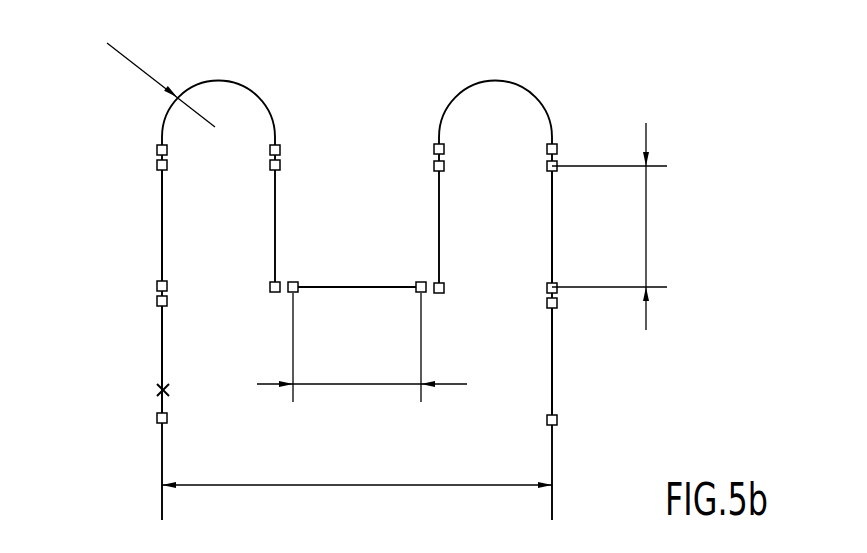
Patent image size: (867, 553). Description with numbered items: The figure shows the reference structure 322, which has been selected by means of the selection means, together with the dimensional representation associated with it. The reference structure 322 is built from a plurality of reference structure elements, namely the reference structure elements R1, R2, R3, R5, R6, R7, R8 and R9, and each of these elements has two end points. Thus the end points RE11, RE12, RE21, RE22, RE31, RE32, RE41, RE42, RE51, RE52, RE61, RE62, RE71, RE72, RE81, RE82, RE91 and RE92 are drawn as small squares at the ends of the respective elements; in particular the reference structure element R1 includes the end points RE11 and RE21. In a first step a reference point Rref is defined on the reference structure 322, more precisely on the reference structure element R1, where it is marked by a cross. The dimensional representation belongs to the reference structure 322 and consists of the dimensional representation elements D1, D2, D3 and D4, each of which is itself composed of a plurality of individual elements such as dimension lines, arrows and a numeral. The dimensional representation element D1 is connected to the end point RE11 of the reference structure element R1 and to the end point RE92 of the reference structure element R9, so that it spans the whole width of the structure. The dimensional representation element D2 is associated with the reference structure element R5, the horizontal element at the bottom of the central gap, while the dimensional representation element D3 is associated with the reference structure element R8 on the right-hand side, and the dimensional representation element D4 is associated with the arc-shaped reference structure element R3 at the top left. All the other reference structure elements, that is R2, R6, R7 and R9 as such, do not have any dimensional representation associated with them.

The reference structure 322 is at (150, 488).
The reference structure element R1 is at (308, 220).
The reference structure element R2 is at (162, 226).
The reference structure element R3 is at (220, 80).
The reference structure element R5 is at (353, 290).
The reference structure element R6 is at (439, 222).
The reference structure element R7 is at (490, 80).
The reference structure element R8 is at (552, 210).
The reference structure element R9 is at (553, 378).
The reference point Rref is at (157, 388).
The end point RE11 is at (157, 420).
The end point RE12 is at (157, 302).
The end point RE21 is at (157, 286).
The end point RE22 is at (157, 165).
The end point RE31 is at (157, 148).
The end point RE32 is at (280, 146).
The end point RE41 is at (280, 165).
The end point RE42 is at (269, 287).
The end point RE51 is at (292, 297).
The end point RE52 is at (424, 294).
The end point RE61 is at (444, 288).
The end point RE62 is at (434, 166).
The end point RE71 is at (437, 144).
The end point RE72 is at (555, 144).
The end point RE81 is at (557, 163).
The end point RE82 is at (558, 288).
The end point RE91 is at (558, 305).
The end point RE92 is at (557, 421).
The dimensional representation element D1 is at (355, 485).
The dimensional representation element D2 is at (353, 385).
The dimensional representation element D3 is at (648, 228).
The dimensional representation element D4 is at (128, 60).